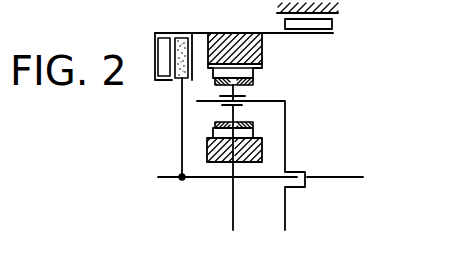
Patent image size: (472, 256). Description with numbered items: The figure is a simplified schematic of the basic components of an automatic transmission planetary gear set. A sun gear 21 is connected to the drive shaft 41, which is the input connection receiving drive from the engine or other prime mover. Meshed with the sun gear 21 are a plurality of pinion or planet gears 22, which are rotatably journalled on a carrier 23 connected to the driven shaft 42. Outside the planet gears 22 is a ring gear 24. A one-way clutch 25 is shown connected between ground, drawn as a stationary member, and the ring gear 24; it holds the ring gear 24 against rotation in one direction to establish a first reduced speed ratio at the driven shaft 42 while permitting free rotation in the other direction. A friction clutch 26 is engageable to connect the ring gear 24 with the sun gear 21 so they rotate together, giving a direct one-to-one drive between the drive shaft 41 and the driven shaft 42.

The sun gear 21 is at (232, 205).
The pinion gears 22 is at (245, 95).
The carrier 23 is at (286, 128).
The ring gear 24 is at (263, 66).
The one-way clutch 25 is at (271, 26).
The friction clutch 26 is at (172, 30).
The drive shaft 41 is at (186, 180).
The driven shaft 42 is at (330, 182).